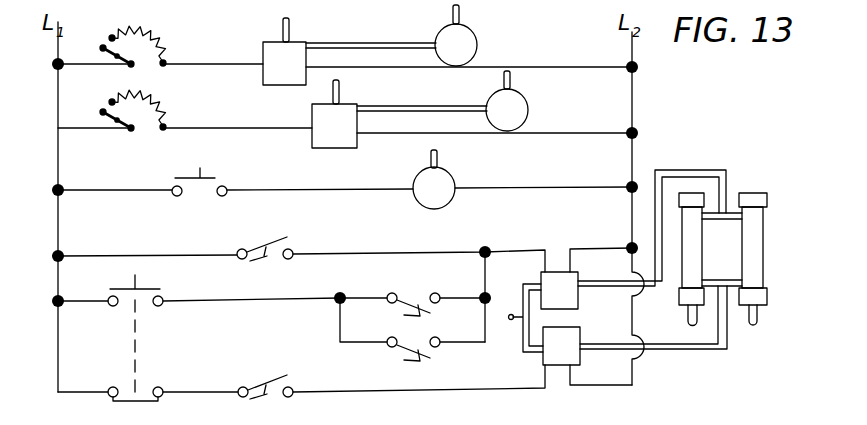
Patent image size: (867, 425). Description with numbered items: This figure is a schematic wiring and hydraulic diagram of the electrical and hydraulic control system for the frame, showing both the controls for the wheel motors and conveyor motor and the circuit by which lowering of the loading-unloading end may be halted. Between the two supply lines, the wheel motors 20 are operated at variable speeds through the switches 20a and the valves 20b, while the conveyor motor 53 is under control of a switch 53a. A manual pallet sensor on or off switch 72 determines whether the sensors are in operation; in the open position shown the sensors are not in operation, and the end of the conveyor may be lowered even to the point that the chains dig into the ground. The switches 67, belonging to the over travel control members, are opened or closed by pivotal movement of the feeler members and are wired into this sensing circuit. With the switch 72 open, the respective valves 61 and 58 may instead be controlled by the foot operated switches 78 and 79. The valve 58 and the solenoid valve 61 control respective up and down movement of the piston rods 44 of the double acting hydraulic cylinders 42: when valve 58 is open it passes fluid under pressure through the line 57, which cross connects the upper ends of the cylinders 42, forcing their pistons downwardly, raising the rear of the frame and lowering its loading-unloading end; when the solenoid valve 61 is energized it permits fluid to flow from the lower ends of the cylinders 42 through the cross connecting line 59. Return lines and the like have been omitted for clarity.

The switch 20a is at (160, 40).
The valve 20b is at (296, 42).
The wheel motor 20 is at (477, 45).
The switch 53a is at (218, 178).
The conveyor motor 53 is at (451, 172).
The foot operated switch 78 is at (285, 237).
The pallet sensor on or off switch 72 is at (125, 290).
The switch 67 is at (425, 280).
The foot operated switch 79 is at (285, 378).
The valve 58 is at (582, 272).
The solenoid valve 61 is at (580, 330).
The line 57 is at (705, 172).
The line 59 is at (688, 348).
The hydraulic cylinder 42 is at (757, 236).
The piston rod 44 is at (693, 313).